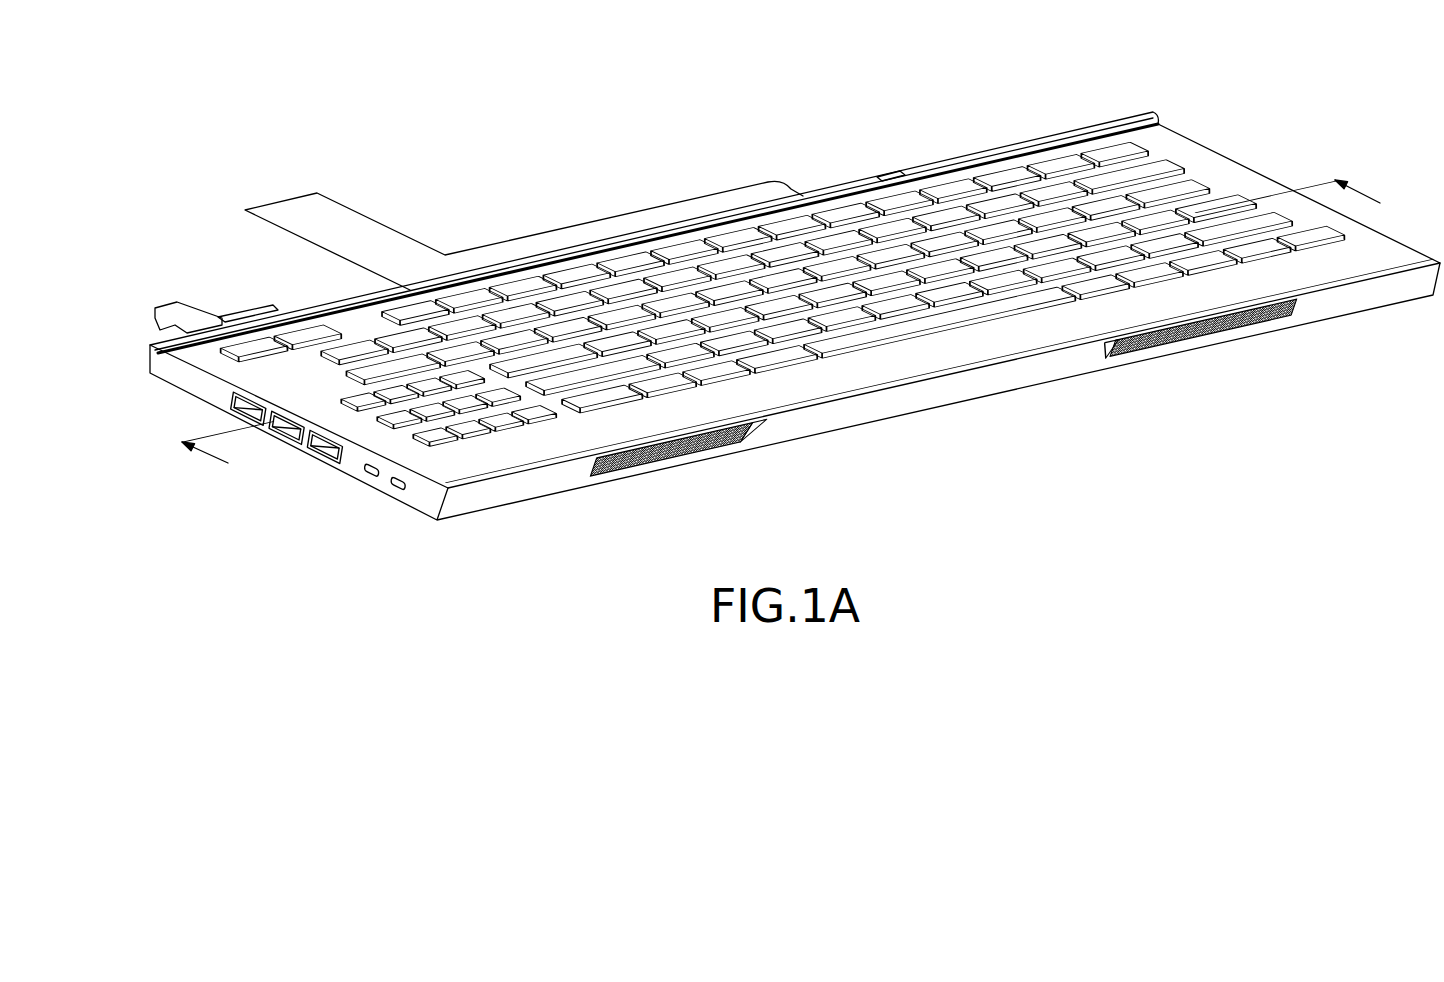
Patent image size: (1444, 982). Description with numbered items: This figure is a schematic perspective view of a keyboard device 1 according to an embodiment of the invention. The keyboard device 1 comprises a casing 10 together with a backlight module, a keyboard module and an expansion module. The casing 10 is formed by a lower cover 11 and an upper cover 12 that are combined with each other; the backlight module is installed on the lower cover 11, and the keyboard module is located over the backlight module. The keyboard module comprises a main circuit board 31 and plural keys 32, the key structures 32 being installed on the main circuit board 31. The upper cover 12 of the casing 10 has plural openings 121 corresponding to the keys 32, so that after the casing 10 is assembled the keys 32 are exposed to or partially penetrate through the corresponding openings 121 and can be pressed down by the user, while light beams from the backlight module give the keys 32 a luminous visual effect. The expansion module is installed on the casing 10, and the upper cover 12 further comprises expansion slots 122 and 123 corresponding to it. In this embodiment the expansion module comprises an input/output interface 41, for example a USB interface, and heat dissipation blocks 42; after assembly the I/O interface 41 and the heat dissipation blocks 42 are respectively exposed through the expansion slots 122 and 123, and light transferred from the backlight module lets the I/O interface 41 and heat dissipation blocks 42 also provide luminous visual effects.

The keyboard device 1 is at (1035, 67).
The casing 10 is at (168, 372).
The lower cover 11 is at (520, 508).
The upper cover 12 is at (1200, 162).
The openings 121 is at (830, 367).
The expansion slot 122 is at (1293, 318).
The expansion slot 123 is at (252, 405).
The main circuit board 31 is at (375, 238).
The keys 32 is at (960, 186).
The input/output (I/O) interface 41 is at (318, 452).
The heat dissipation blocks 42 is at (1218, 338).